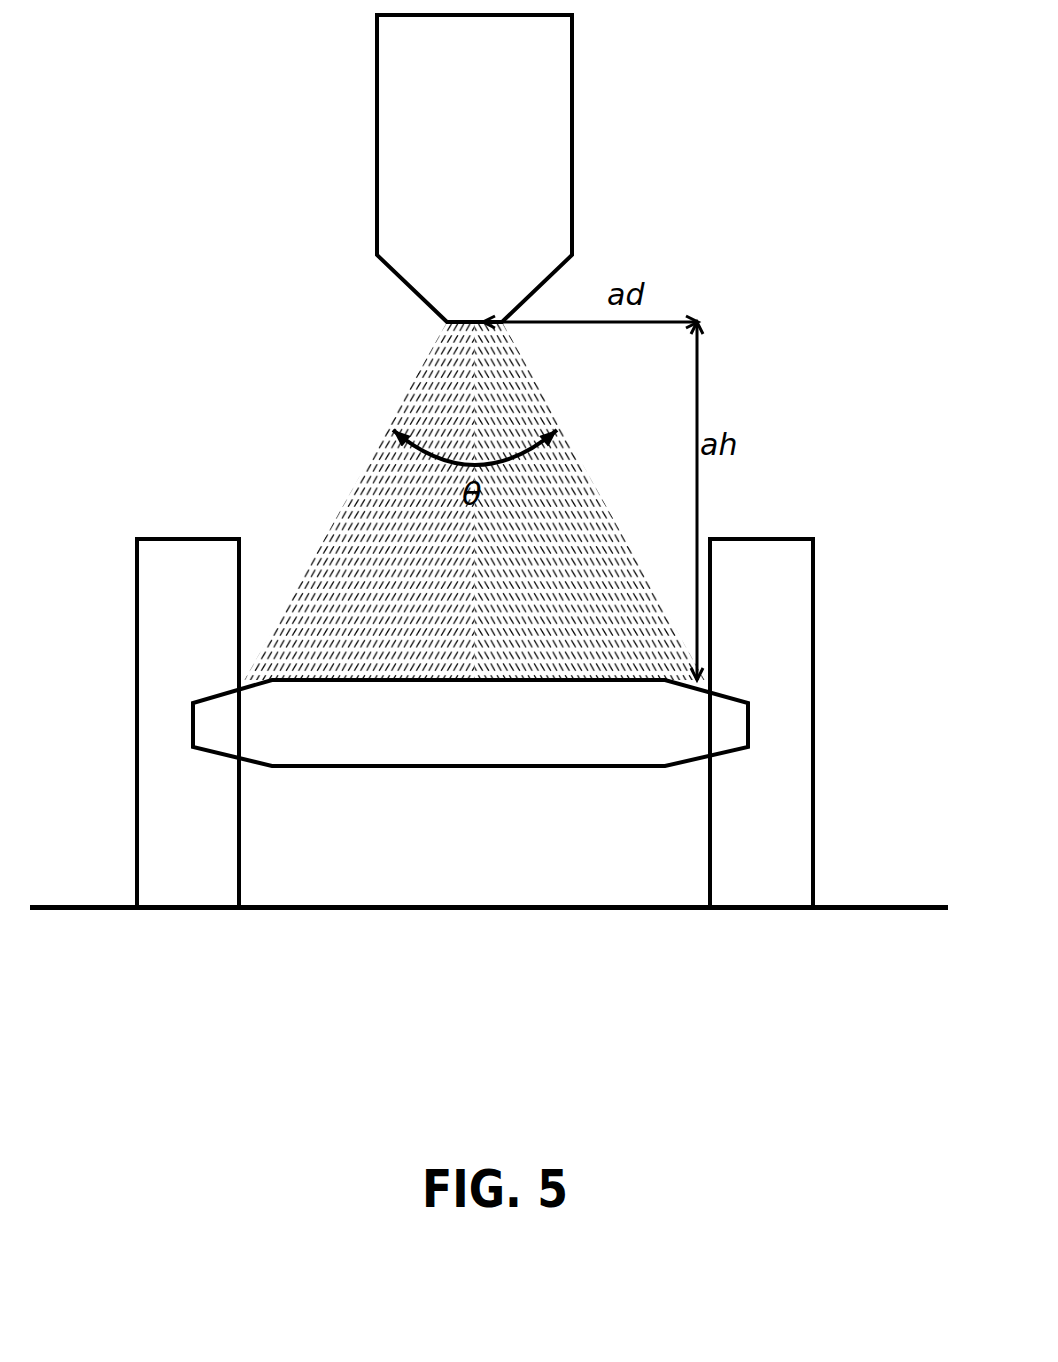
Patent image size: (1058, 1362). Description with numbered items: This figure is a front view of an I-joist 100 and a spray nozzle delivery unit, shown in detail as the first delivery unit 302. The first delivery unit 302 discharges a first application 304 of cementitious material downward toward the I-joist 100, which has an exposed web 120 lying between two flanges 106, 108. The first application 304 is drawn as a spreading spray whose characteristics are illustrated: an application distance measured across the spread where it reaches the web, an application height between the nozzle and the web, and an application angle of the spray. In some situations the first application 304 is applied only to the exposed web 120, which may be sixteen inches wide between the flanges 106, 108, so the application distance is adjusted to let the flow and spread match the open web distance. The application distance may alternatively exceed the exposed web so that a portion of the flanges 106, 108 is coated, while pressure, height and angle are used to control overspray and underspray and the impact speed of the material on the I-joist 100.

The I-joist 100 is at (140, 492).
The flange 106 is at (188, 723).
The flange 108 is at (761, 723).
The exposed web 120 is at (470, 723).
The first delivery unit 302 is at (474, 168).
The first application 304 is at (420, 382).